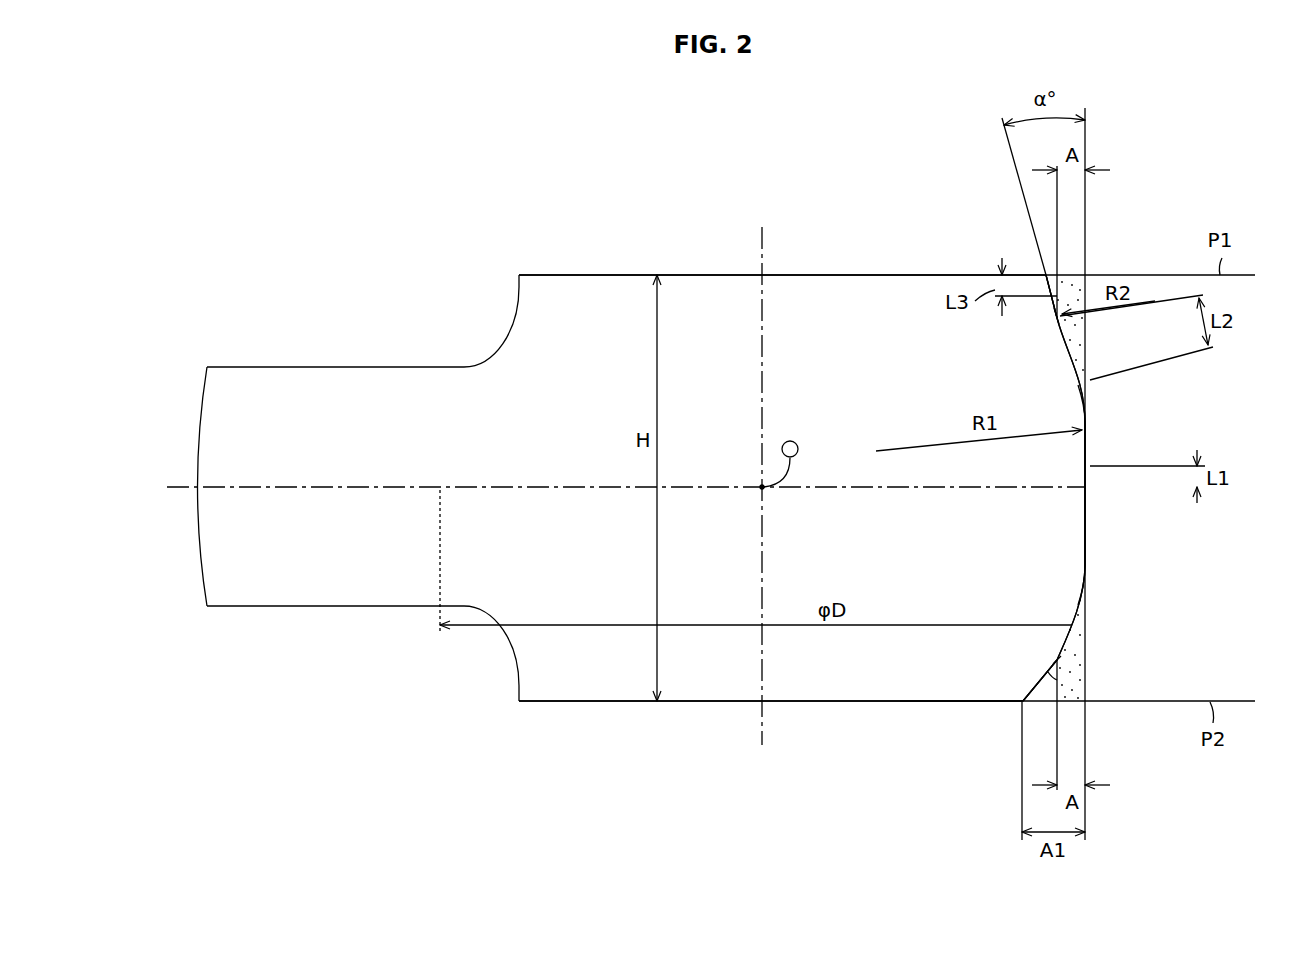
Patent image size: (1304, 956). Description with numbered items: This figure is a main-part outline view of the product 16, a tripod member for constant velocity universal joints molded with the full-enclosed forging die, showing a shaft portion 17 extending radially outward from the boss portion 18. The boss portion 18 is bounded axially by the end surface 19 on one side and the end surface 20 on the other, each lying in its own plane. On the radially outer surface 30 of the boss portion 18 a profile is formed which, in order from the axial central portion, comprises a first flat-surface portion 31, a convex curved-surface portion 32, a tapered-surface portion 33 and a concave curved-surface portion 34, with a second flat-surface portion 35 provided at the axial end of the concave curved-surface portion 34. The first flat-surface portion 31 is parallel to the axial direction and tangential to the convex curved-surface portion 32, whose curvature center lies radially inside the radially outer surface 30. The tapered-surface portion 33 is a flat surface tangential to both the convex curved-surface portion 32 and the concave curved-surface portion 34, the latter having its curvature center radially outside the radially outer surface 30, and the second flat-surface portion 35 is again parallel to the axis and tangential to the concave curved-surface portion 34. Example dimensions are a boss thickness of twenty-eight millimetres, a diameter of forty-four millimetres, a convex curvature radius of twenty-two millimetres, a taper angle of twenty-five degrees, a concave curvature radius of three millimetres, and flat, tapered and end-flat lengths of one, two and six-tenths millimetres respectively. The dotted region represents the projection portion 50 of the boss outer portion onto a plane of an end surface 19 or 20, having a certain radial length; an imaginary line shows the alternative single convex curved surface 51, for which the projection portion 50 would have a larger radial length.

The product 16 is at (888, 275).
The shaft portion 17 is at (343, 398).
The boss portion 18 is at (838, 683).
The end surface 19 is at (826, 275).
The end surface 20 is at (934, 703).
The radially outer surface 30 is at (1092, 433).
The first flat-surface portion 31 is at (1090, 478).
The convex curved-surface portion 32 is at (1085, 400).
The tapered-surface portion 33 is at (1068, 353).
The concave curved-surface portion 34 is at (1060, 312).
The second flat-surface portion 35 is at (1060, 300).
The projection portion 50 is at (1064, 292).
The single convex curved surface 51 is at (1063, 676).